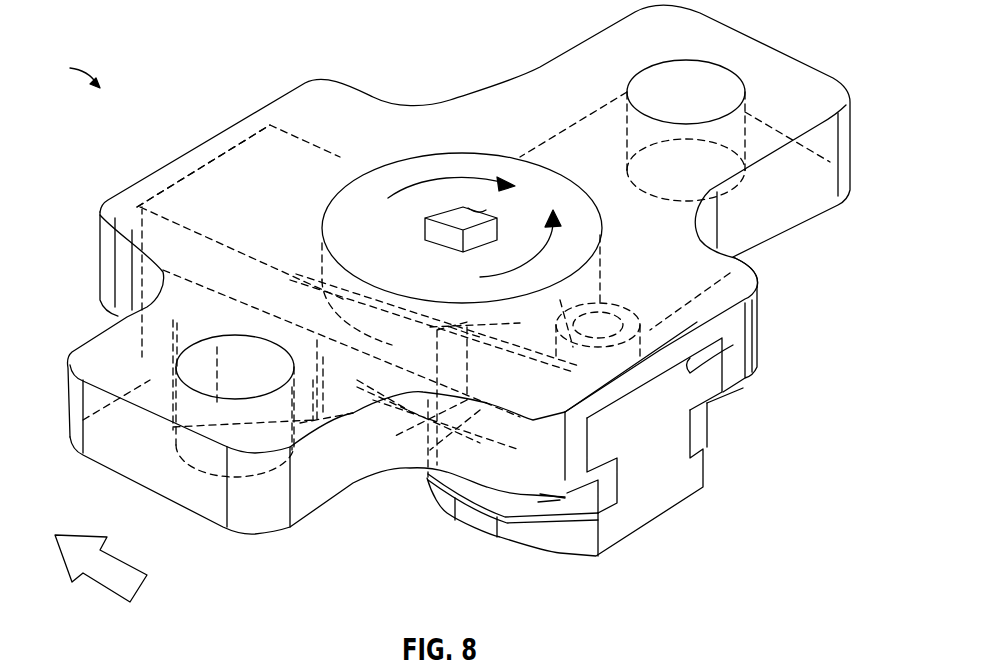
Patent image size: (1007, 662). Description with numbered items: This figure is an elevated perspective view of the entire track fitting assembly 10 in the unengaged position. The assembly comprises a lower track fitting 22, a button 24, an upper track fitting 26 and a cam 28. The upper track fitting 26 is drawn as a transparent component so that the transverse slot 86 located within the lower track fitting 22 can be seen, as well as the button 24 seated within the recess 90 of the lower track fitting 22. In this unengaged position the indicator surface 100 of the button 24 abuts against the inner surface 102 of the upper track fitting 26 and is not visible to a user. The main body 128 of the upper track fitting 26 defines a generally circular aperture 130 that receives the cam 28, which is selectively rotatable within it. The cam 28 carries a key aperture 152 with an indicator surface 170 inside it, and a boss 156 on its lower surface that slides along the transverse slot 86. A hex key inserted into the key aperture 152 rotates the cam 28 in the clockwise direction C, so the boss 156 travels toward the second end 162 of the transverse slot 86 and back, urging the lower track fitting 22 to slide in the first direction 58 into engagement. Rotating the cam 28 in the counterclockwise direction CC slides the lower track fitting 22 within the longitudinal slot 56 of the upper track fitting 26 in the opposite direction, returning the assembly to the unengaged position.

The track fitting assembly 10 is at (72, 660).
The lower track fitting 22 is at (687, 485).
The button 24 is at (757, 267).
The upper track fitting 26 is at (315, 78).
The cam 28 is at (425, 170).
The longitudinal slot 56 is at (607, 408).
The first direction 58 is at (107, 563).
The transverse slot 86 is at (427, 468).
The recess 90 is at (573, 352).
The indicator surface 100 is at (630, 292).
The inner surface 102 is at (733, 347).
The main body 128 is at (237, 180).
The aperture 130 is at (500, 157).
The key aperture 152 is at (480, 217).
The boss 156 is at (497, 340).
The second end 162 is at (353, 413).
The indicator surface 170 is at (437, 228).
The clockwise direction C is at (460, 180).
The counterclockwise direction CC is at (562, 228).